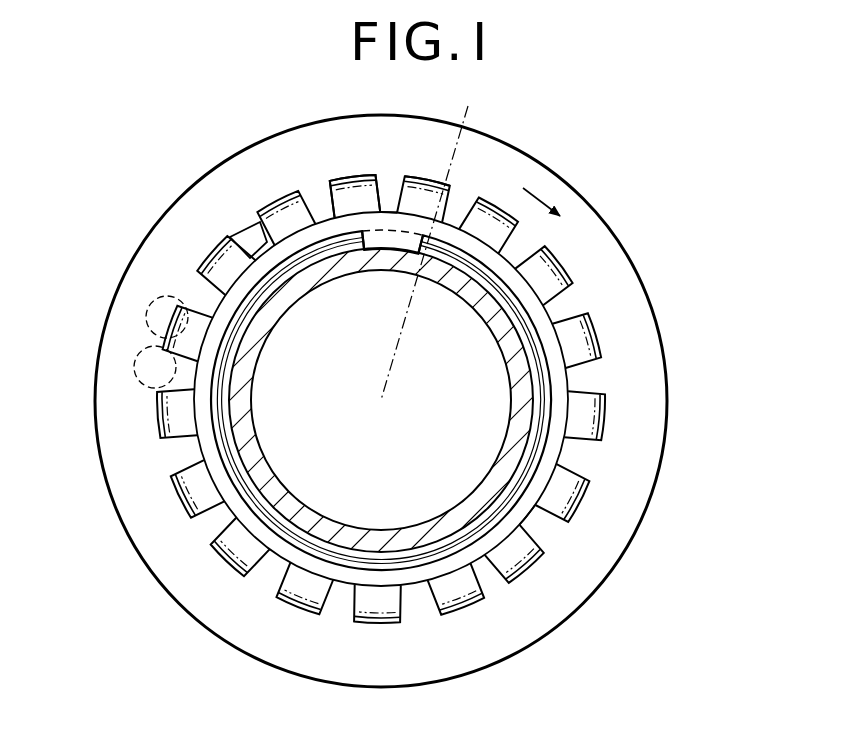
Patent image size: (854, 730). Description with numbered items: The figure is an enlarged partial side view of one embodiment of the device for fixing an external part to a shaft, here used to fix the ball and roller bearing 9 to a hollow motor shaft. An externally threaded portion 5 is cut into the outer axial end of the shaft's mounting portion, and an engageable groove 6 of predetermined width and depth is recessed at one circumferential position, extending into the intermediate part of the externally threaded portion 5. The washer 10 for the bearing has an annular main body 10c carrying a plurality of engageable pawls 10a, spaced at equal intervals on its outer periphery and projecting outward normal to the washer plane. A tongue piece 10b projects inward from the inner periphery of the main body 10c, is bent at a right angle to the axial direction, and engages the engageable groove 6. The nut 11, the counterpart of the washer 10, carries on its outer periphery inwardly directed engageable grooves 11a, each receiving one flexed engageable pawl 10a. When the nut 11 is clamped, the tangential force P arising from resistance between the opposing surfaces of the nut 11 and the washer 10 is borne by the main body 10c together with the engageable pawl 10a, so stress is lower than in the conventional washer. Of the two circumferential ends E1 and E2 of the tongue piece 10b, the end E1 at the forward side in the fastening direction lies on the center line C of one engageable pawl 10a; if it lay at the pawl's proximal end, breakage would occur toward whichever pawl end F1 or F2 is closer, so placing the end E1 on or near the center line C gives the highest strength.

The externally threaded portion 5 is at (288, 491).
The engageable groove 6 is at (392, 255).
The ball and roller bearing 9 is at (663, 457).
The washer for a bearing 10 is at (612, 348).
The engageable pawls 10a is at (270, 216).
The tongue piece 10b is at (373, 172).
The main body 10c is at (525, 512).
The nut 11 is at (242, 228).
The engageable grooves 11a is at (160, 413).
The center line C is at (439, 237).
The end E1 is at (416, 256).
The end E2 is at (366, 254).
The end F1 is at (455, 190).
The end F2 is at (400, 250).
The tangential force P is at (553, 219).